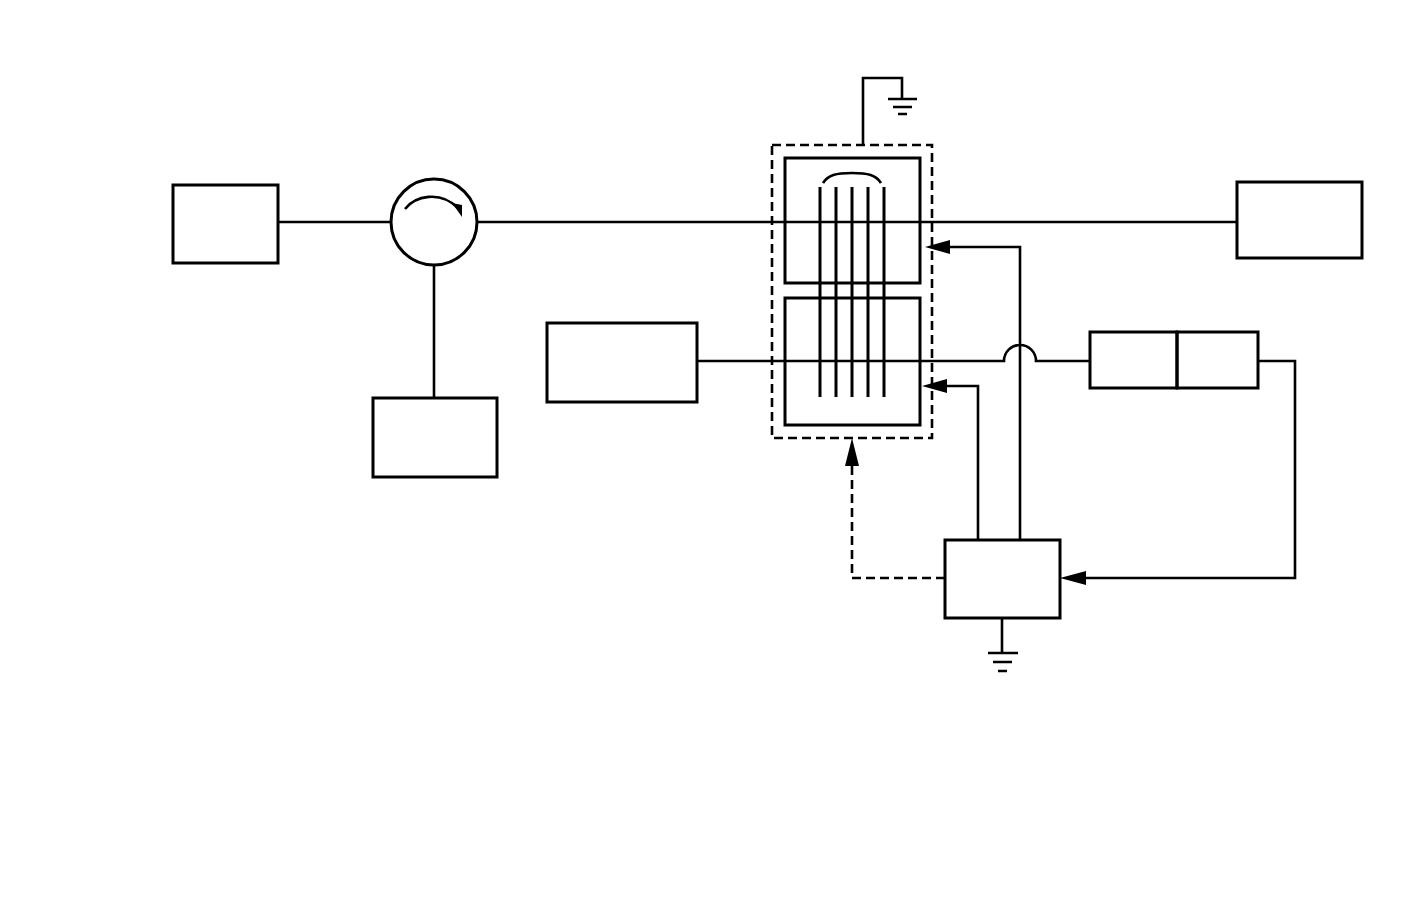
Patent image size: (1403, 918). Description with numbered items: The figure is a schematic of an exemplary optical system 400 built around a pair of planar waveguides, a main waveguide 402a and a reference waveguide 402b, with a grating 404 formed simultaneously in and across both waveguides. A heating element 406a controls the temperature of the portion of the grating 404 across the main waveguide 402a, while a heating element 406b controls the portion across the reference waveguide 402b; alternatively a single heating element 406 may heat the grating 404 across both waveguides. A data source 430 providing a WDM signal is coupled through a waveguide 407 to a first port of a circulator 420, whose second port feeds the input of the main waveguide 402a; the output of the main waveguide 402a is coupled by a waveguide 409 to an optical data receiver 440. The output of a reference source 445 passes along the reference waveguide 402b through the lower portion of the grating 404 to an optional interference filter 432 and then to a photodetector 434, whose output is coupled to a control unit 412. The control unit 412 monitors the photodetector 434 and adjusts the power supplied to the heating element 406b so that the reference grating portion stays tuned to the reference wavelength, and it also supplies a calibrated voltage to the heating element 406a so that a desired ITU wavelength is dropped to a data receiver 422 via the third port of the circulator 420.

The optical system 400 is at (1173, 70).
The main waveguide 402a is at (685, 222).
The reference waveguide 402b is at (743, 364).
The grating 404 is at (851, 172).
The single heating element 406 is at (863, 283).
The heating element 406a is at (798, 158).
The heating element 406b is at (815, 428).
The waveguide 407 is at (308, 222).
The waveguide 409 is at (1138, 222).
The control unit 412 is at (1038, 540).
The circulator 420 is at (445, 180).
The data receiver 422 is at (455, 398).
The data source 430 is at (253, 185).
The interference filter 432 is at (1102, 332).
The photodetector 434 is at (1230, 332).
The optical data receiver 440 is at (1337, 182).
The reference source 445 is at (592, 323).